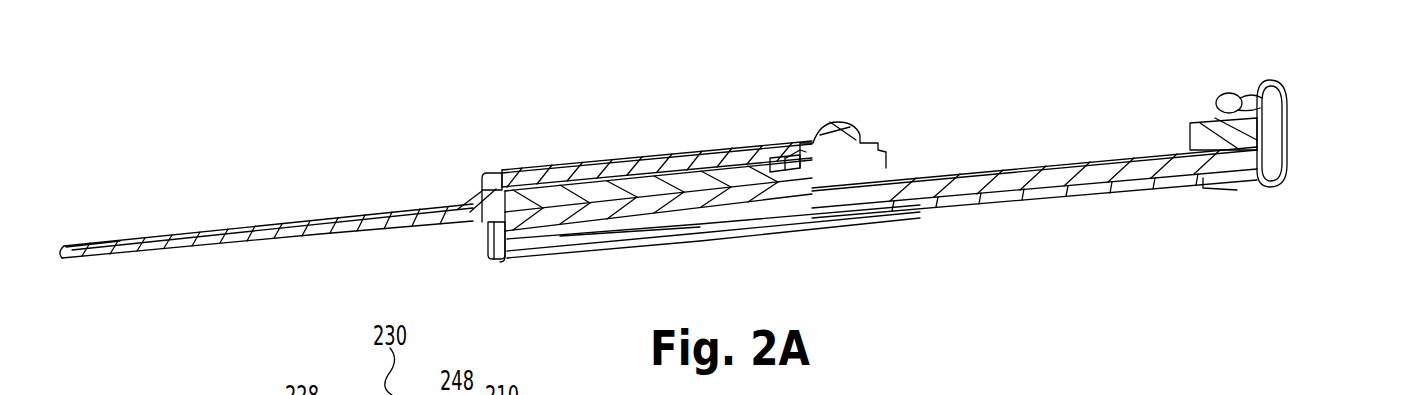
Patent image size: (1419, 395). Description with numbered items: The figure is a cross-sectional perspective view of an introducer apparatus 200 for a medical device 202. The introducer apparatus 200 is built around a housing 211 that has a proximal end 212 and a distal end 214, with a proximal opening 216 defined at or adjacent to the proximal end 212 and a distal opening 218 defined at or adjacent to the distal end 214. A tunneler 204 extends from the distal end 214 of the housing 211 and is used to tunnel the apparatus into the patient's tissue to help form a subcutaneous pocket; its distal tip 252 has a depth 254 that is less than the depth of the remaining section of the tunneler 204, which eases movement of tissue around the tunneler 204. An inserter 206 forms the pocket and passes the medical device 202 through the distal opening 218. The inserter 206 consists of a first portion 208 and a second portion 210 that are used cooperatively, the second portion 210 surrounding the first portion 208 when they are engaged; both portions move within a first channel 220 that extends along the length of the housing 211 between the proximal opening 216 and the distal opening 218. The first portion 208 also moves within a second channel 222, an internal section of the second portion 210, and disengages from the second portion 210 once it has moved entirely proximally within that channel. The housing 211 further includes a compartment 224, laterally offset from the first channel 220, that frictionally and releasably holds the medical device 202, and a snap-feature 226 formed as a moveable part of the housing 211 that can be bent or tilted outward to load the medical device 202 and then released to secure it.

The introducer apparatus 200 is at (146, 123).
The medical device 202 is at (693, 165).
The tunneler 204 is at (278, 228).
The inserter 206 is at (1357, 238).
The first portion of the inserter 208 is at (1278, 187).
The second portion of the inserter 210 is at (1238, 188).
The housing 211 is at (872, 222).
The proximal end 212 is at (853, 115).
The distal end 214 is at (512, 272).
The proximal opening 216 is at (907, 220).
The distal opening 218 is at (472, 242).
The first channel 220 is at (735, 243).
The second channel 222 is at (1046, 196).
The compartment 224 is at (780, 162).
The snap-feature 226 is at (802, 152).
The distal tip 252 is at (60, 250).
The depth 254 is at (97, 298).